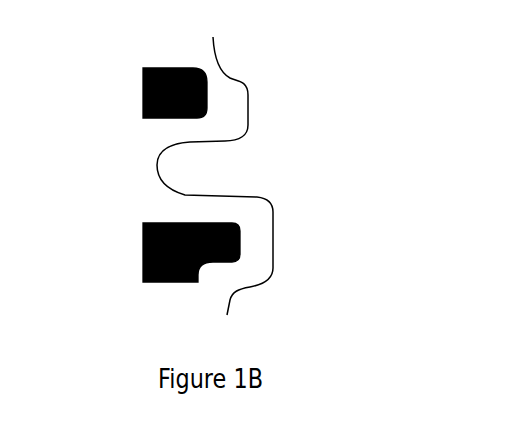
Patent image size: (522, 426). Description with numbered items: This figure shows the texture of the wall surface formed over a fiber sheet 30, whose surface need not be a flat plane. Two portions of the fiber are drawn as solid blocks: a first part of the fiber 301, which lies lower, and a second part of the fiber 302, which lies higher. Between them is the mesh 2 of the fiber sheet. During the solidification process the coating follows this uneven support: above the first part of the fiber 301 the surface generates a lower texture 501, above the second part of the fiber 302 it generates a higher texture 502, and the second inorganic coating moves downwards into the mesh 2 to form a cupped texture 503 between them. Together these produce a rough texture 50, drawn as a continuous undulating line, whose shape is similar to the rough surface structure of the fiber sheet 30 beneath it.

The mesh 2 is at (157, 133).
The fiber sheet 30 is at (142, 262).
The rough texture 50 is at (218, 290).
The first part of the fiber 301 is at (207, 97).
The second part of the fiber 302 is at (240, 250).
The lower texture 501 is at (232, 113).
The higher texture 502 is at (262, 225).
The cupped texture 503 is at (180, 167).